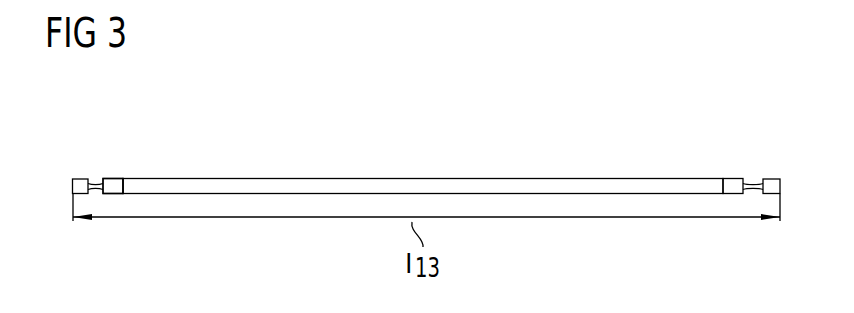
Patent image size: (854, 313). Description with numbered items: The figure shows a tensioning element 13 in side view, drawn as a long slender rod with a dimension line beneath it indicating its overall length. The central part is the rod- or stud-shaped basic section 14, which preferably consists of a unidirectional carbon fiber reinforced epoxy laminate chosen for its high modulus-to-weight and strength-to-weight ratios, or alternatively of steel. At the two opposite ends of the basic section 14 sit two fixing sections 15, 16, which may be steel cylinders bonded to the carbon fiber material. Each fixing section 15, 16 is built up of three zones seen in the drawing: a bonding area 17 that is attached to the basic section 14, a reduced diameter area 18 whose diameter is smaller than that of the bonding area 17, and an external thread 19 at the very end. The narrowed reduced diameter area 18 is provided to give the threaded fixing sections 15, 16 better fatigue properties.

The tensioning element 13 is at (411, 122).
The basic section 14 is at (243, 185).
The fixing section 15 is at (115, 163).
The fixing section 16 is at (733, 178).
The bonding area 17 is at (113, 182).
The reduced diameter area 18 is at (95, 183).
The external thread 19 is at (73, 180).